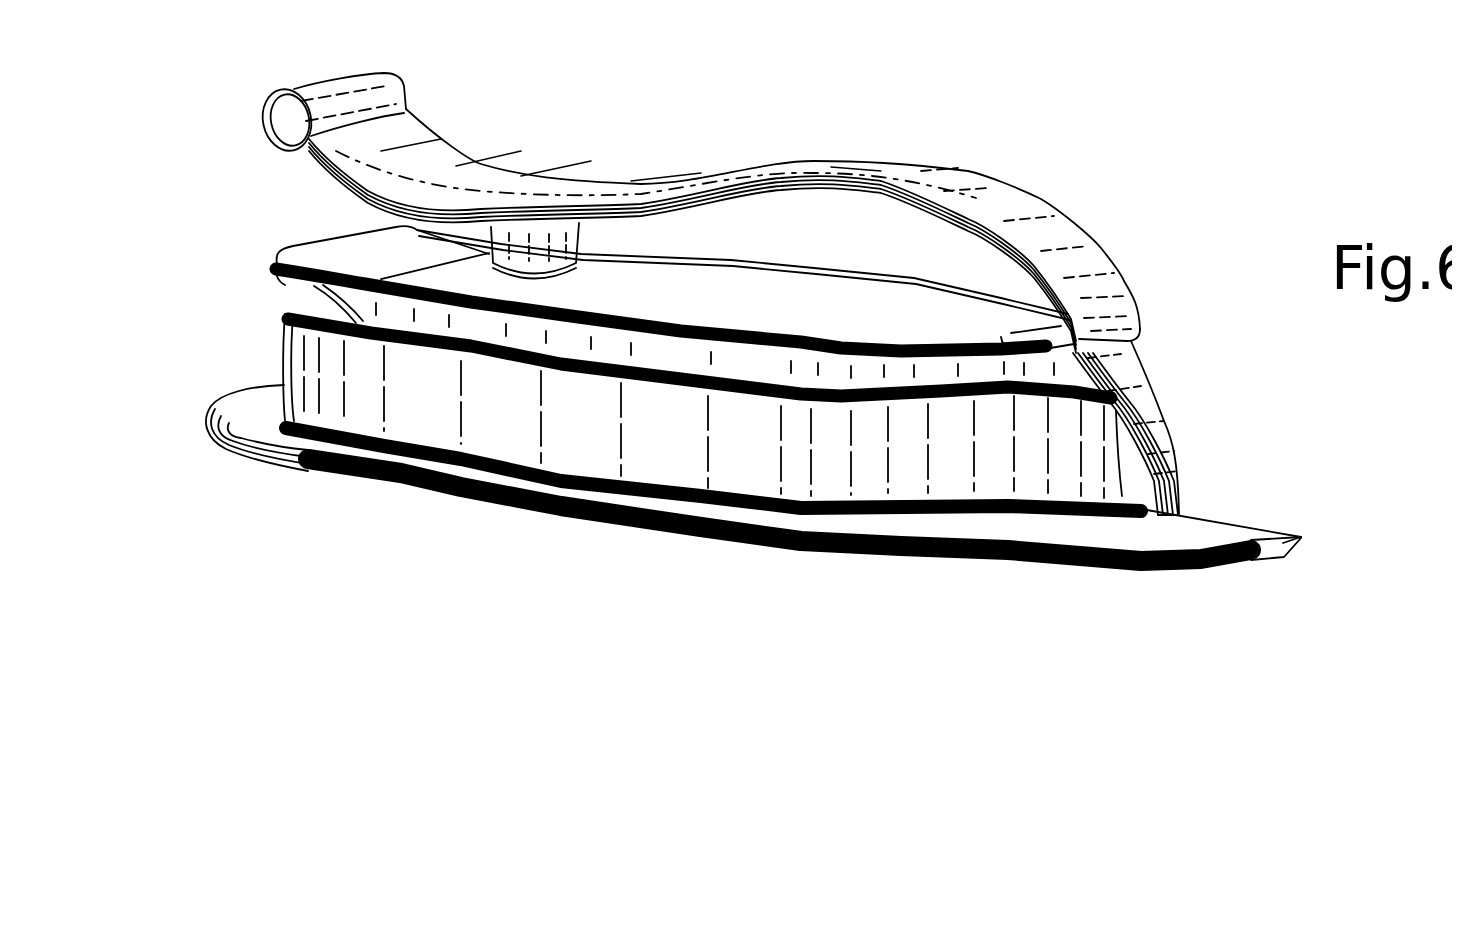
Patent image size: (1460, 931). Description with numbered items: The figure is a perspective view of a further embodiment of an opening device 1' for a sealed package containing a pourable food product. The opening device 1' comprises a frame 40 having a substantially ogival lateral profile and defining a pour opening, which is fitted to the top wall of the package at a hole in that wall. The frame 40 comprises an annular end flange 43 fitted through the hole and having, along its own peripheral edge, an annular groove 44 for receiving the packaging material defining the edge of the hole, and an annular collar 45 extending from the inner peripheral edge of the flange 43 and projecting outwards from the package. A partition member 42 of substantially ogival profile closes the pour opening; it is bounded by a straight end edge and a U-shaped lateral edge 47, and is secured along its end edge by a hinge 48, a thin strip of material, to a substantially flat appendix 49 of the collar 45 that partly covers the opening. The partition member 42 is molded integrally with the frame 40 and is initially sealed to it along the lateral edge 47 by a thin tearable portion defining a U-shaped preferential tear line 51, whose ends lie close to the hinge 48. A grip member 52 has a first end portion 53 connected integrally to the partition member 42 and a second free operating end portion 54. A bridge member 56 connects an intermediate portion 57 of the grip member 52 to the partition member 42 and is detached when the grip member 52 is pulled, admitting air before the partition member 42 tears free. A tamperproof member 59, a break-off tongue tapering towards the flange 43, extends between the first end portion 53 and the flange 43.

The opening device 1' is at (193, 531).
The frame 40 is at (387, 488).
The partition member 42 is at (730, 295).
The annular end flange 43 is at (1017, 517).
The annular groove 44 is at (1305, 543).
The annular collar 45 is at (327, 388).
The U-shaped lateral edge 47 is at (890, 265).
The hinge 48 is at (432, 252).
The flat appendix 49 is at (343, 250).
The U-shaped preferential tear line 51 is at (810, 380).
The grip member 52 is at (998, 205).
The first end portion 53 is at (1108, 308).
The second free operating end portion 54 is at (345, 105).
The bridge member 56 is at (522, 235).
The intermediate portion 57 is at (668, 185).
The tamperproof member 59 is at (1155, 430).